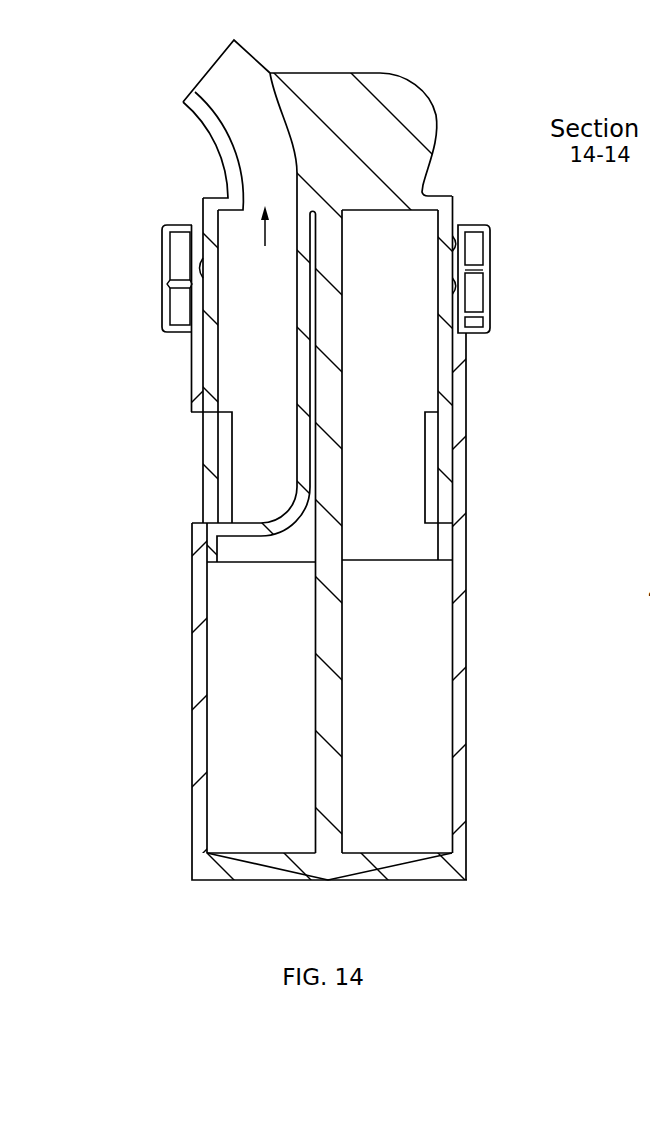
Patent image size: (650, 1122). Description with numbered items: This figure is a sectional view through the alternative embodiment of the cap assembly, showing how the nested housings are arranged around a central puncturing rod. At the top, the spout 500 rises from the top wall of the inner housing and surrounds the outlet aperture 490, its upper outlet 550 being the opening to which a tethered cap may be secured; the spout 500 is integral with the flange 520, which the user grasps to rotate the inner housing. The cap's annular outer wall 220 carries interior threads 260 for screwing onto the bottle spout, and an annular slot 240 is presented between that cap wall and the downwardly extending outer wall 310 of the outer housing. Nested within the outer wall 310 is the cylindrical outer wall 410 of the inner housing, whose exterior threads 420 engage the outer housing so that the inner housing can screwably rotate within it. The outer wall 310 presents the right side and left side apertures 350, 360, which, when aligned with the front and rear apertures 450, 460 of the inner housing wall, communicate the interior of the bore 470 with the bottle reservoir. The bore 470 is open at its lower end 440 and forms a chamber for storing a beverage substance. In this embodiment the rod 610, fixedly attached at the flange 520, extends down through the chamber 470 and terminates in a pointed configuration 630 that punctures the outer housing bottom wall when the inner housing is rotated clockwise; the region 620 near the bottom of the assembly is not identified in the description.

The annular outer wall 220 is at (163, 264).
The annular slot 240 is at (178, 333).
The threads 260 is at (168, 283).
The outer wall 310 is at (200, 686).
The right side aperture 350 is at (453, 472).
The left side aperture 360 is at (200, 467).
The outer wall 410 is at (212, 380).
The threads 420 is at (204, 270).
The open end 440 is at (253, 562).
The front aperture 450 is at (217, 505).
The rear aperture 460 is at (453, 505).
The bore 470 is at (358, 397).
The outlet aperture 490 is at (262, 240).
The spout 500 is at (243, 135).
The flange 520 is at (418, 123).
The upper outlet 550 is at (183, 102).
The rod 610 is at (330, 713).
The bottom wall 620 is at (318, 845).
The pointed configuration 630 is at (365, 858).